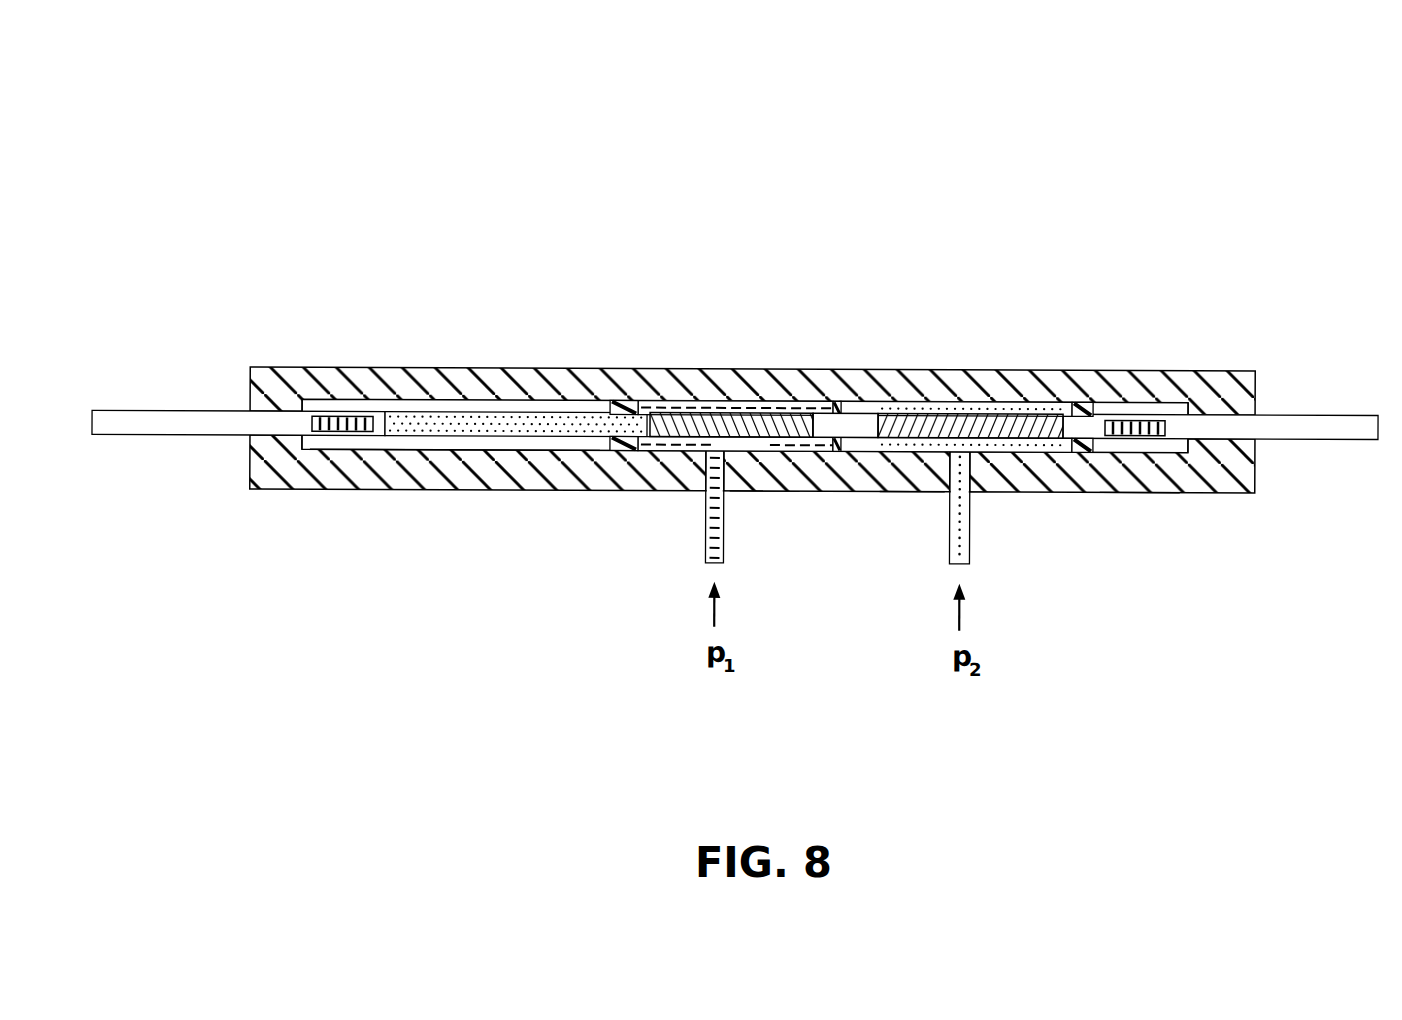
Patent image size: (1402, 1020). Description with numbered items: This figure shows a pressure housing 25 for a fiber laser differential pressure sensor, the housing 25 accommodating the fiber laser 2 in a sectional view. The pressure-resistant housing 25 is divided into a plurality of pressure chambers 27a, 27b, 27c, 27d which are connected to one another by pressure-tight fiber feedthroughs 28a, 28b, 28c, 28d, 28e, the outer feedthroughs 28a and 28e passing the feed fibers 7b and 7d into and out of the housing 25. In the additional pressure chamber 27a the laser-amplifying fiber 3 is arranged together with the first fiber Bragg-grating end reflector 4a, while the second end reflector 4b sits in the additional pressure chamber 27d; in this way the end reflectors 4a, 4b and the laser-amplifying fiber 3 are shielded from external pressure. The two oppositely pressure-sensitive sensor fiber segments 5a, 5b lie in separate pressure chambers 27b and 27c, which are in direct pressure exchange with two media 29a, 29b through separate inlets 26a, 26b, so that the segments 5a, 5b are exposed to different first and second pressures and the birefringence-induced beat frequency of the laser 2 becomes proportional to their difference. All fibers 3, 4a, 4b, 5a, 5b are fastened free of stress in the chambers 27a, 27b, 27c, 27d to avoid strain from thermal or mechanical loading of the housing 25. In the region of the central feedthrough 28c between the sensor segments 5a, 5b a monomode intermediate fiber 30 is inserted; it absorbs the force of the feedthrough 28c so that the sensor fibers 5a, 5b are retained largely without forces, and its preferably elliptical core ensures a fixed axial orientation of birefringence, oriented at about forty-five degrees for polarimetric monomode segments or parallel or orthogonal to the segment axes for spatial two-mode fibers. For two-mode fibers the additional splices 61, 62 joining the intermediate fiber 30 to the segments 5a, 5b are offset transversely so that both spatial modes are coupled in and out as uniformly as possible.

The fiber laser 2 is at (250, 120).
The laser-amplifying fiber 3 is at (490, 420).
The end reflector 4a is at (348, 420).
The end reflector 4b is at (1142, 428).
The sensor fiber segment 5a is at (727, 425).
The sensor fiber segment 5b is at (993, 428).
The feed fiber 7b is at (177, 427).
The feed fiber 7d is at (1283, 432).
The pressure housing 25 is at (400, 371).
The inlet 26a is at (707, 552).
The inlet 26b is at (968, 555).
The pressure chamber 27a is at (458, 445).
The pressure chamber 27b is at (768, 455).
The pressure chamber 27c is at (923, 455).
The pressure chamber 27d is at (1148, 450).
The pressure-tight fiber feedthrough 28a is at (283, 443).
The pressure-tight fiber feedthrough 28b is at (627, 450).
The pressure-tight fiber feedthrough 28c is at (849, 456).
The pressure-tight fiber feedthrough 28d is at (1082, 450).
The pressure-tight fiber feedthrough 28e is at (1230, 450).
The medium 29a is at (668, 408).
The medium 29b is at (1040, 412).
The monomode intermediate fiber 30 is at (847, 428).
The splice 61 is at (803, 425).
The splice 62 is at (888, 415).